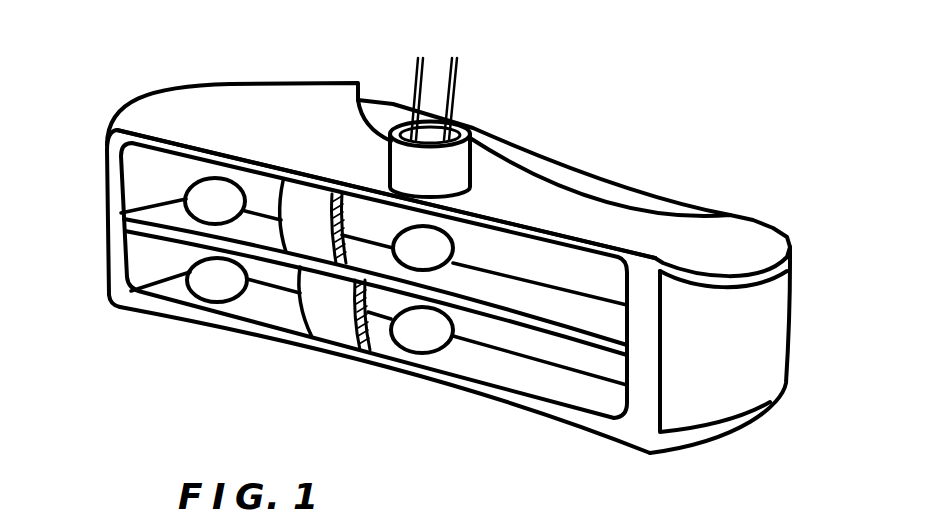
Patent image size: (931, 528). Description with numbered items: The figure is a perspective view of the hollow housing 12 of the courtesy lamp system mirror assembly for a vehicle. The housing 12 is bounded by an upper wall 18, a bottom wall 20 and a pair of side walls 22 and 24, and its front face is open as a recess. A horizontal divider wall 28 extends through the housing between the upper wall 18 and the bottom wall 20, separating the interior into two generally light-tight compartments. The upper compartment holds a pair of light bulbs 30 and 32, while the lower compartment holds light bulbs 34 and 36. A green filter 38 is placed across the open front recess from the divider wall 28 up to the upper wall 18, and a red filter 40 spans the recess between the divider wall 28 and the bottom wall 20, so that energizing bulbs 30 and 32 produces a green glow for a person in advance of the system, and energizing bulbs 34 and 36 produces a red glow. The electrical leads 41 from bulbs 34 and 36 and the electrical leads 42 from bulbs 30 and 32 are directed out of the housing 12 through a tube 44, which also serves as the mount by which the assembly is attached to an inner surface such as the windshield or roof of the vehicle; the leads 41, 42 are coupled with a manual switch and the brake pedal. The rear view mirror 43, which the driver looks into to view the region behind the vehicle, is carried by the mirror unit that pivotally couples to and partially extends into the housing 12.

The hollow housing 12 is at (737, 200).
The upper wall 18 is at (247, 108).
The bottom wall 20 is at (520, 375).
The side wall 22 is at (733, 375).
The side wall 24 is at (132, 185).
The horizontal divider wall 28 is at (503, 293).
The light bulb 30 is at (207, 193).
The light bulb 32 is at (420, 255).
The light bulb 34 is at (213, 288).
The light bulb 36 is at (432, 338).
The green filter 38 is at (313, 247).
The red filter 40 is at (342, 330).
The electrical leads 41 is at (455, 77).
The electrical leads 42 is at (412, 77).
The rear view mirror 43 is at (462, 218).
The tube 44 is at (452, 158).